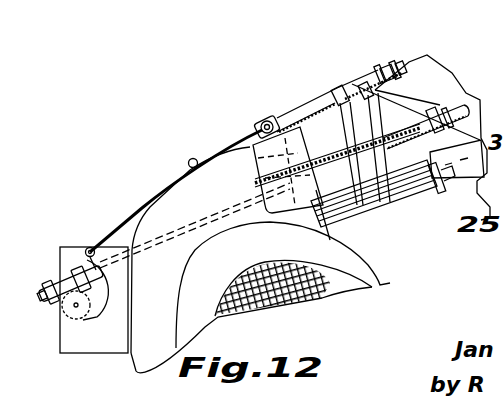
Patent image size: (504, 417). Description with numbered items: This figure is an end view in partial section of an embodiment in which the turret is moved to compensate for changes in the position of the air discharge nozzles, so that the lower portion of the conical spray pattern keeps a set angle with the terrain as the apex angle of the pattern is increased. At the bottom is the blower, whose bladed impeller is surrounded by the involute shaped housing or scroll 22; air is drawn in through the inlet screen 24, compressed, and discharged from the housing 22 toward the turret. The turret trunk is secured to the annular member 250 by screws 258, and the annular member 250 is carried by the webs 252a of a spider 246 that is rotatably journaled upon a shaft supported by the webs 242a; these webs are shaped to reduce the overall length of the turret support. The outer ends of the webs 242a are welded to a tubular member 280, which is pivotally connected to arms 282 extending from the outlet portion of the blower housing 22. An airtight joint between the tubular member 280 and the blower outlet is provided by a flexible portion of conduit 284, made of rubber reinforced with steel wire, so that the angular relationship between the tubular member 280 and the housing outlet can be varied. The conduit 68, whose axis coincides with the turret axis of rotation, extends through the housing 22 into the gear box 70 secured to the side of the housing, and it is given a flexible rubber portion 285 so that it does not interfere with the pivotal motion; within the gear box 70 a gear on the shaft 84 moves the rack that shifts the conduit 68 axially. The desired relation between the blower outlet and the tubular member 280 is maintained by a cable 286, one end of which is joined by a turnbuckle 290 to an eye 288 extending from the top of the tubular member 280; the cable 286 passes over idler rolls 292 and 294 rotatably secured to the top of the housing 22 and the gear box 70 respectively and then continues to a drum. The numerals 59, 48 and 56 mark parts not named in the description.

The involute housing 22 is at (380, 257).
The inlet screen 24 is at (302, 300).
The flexible portion 285 is at (316, 190).
The gear box 70 is at (96, 342).
The idler roll 294 is at (88, 249).
The shaft 84 is at (78, 307).
The cable 286 is at (126, 214).
The idler roll 292 is at (190, 160).
The flexible portion of conduit 284 is at (298, 112).
The turnbuckle 290 is at (292, 106).
The webs 252a is at (346, 78).
The annular member 250 is at (385, 103).
The screws 258 is at (378, 72).
The end nut 59 is at (400, 70).
The eye 288 is at (332, 90).
The cowl 48 is at (410, 76).
The panel 56 is at (468, 104).
The arms 282 is at (262, 155).
The webs 242a is at (379, 176).
The tubular member 280 is at (393, 190).
The spider 246 is at (420, 96).
The conduit 68 is at (455, 108).